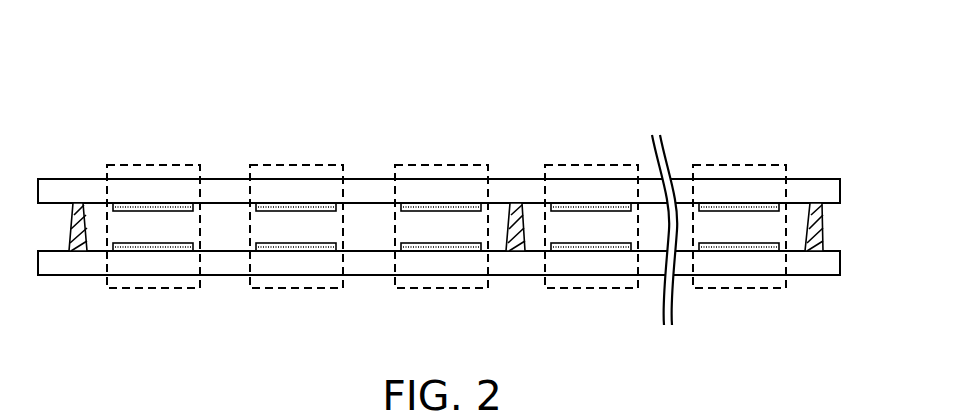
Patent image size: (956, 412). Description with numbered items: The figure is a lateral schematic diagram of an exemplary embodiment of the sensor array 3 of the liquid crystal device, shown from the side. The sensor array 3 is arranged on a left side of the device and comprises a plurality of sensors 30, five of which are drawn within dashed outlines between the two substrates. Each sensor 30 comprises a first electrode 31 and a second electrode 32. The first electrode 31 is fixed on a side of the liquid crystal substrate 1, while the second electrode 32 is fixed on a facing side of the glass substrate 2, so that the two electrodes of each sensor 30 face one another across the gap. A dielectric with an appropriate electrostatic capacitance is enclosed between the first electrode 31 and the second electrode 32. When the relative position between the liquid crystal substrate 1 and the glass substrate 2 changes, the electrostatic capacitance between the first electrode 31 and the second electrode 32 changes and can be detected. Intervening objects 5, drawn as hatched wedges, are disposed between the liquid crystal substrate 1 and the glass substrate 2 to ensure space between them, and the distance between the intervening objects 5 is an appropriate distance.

The liquid crystal substrate 1 is at (835, 268).
The glass substrate 2 is at (833, 180).
The sensor array 3 is at (815, 86).
The intervening object 5 is at (79, 250).
The sensor 30 is at (778, 160).
The first electrode 31 is at (150, 247).
The second electrode 32 is at (150, 205).